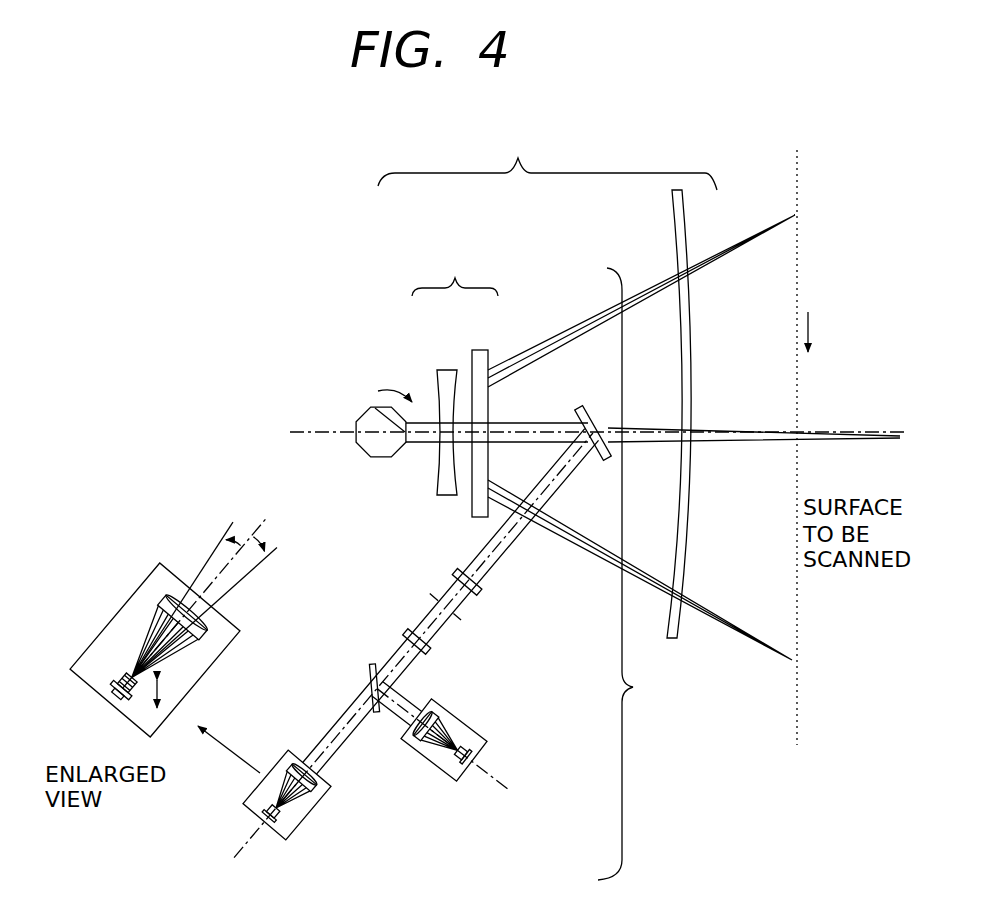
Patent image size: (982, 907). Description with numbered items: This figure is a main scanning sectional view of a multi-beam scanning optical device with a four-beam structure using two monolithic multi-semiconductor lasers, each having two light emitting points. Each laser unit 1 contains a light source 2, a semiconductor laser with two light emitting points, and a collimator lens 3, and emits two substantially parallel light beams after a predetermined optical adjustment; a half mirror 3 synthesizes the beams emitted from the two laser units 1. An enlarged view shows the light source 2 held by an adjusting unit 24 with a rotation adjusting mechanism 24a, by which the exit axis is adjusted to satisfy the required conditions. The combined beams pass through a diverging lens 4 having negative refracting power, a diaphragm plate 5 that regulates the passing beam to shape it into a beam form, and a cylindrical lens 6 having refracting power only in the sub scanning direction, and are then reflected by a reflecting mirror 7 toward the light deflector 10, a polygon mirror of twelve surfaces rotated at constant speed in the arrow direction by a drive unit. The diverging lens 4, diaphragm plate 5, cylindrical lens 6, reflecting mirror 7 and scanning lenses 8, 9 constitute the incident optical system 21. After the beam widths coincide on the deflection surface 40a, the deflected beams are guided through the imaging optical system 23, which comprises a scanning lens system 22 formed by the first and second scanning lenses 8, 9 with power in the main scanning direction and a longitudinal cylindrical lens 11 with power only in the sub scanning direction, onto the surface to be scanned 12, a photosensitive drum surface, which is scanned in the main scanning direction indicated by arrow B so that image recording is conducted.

The laser unit 1 is at (275, 838).
The light source 2 is at (125, 680).
The collimator lens 3 is at (373, 664).
The diverging lens 4 is at (412, 632).
The diaphragm plate 5 is at (436, 595).
The cylindrical lens 6 is at (478, 589).
The reflecting mirror 7 is at (596, 410).
The first scanning lens 8 is at (447, 370).
The second scanning lens 9 is at (481, 350).
The light deflector 10 is at (350, 398).
The deflecting surface 40a is at (382, 409).
The longitudinal cylindrical lens 11 is at (672, 206).
The surface to be scanned 12 is at (800, 178).
The incident optical system 21 is at (634, 574).
The scanning lens system 22 is at (455, 277).
The imaging optical system 23 is at (547, 163).
The adjusting unit 24 is at (128, 700).
The rotation adjusting mechanism 24a is at (140, 706).
The main scanning direction B is at (808, 318).